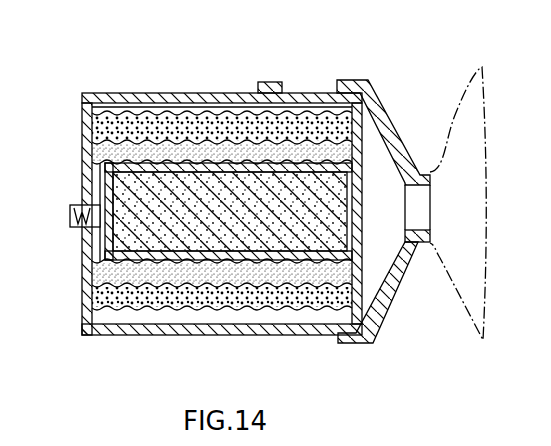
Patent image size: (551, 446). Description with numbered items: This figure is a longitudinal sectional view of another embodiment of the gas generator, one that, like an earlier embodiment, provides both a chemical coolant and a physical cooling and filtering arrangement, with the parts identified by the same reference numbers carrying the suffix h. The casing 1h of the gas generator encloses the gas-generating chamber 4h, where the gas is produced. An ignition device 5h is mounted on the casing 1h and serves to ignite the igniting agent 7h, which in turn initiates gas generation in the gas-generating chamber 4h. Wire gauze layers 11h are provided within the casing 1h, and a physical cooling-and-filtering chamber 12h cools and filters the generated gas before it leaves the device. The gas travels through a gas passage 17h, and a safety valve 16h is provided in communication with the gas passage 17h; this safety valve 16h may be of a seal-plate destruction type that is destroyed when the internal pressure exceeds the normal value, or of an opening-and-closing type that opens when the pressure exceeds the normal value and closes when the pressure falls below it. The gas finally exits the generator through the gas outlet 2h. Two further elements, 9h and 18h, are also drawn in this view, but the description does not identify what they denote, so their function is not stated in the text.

The casing 1h is at (170, 95).
The gas outlet 2h is at (418, 212).
The gas-generating chamber 4h is at (282, 222).
The ignition device 5h is at (70, 217).
The igniting agent 7h is at (133, 255).
The liner 9h is at (100, 248).
The wire gauze layers 11h is at (303, 160).
The physical cooling-and-filtering chamber 12h is at (130, 148).
The safety valve 16h is at (268, 82).
The gas passage 17h is at (97, 110).
The spray envelope 18h is at (460, 112).